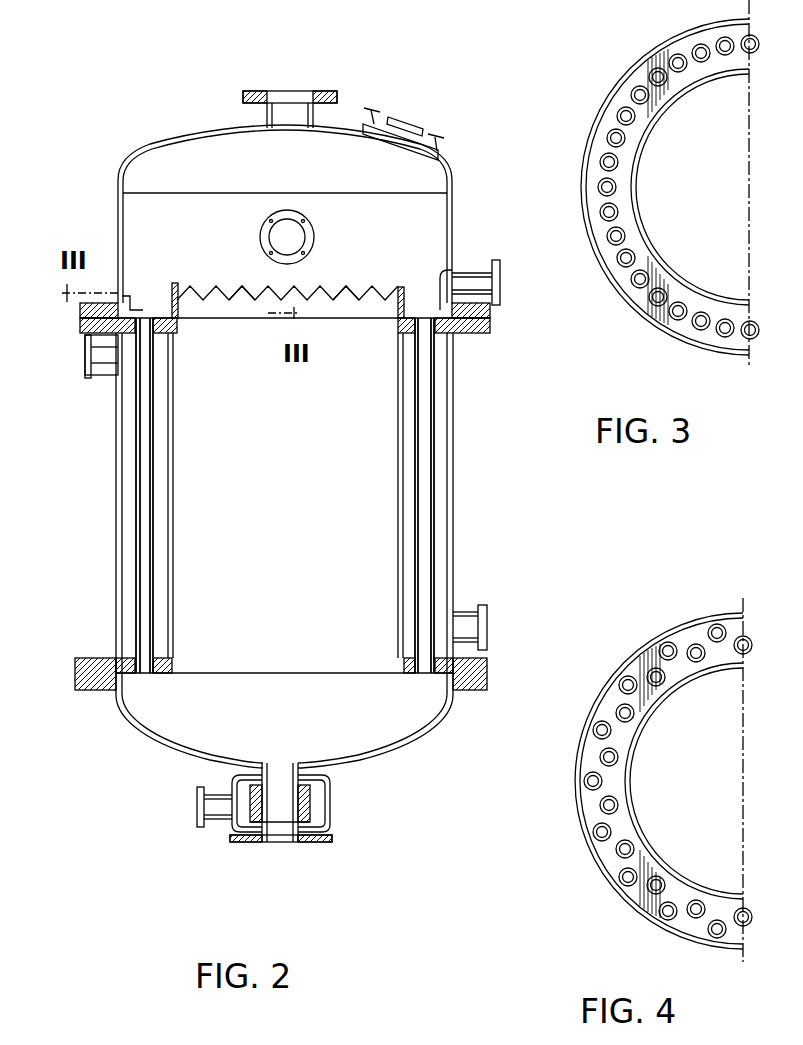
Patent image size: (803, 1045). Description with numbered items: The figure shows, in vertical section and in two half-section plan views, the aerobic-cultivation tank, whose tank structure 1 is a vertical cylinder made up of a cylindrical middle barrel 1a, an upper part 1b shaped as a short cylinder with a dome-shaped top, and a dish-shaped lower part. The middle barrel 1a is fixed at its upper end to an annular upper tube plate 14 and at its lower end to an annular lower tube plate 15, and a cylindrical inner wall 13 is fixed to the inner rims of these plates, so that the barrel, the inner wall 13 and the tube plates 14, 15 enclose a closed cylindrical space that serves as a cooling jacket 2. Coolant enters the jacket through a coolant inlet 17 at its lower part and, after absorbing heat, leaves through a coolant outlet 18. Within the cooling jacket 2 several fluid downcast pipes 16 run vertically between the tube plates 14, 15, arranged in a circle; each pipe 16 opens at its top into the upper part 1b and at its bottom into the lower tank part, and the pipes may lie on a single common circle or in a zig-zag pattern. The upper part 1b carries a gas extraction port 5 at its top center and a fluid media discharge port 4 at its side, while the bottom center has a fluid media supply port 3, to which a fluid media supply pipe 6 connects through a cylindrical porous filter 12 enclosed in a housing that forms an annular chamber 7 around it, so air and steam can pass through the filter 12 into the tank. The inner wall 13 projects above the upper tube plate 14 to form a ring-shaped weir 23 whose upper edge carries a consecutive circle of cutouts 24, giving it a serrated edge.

In FIG. 2, the tank structure 1 is at (298, 446).
In FIG. 2, the middle barrel 1a is at (452, 465).
In FIG. 2, the upper part 1b is at (455, 212).
In FIG. 3, the upper part 1b is at (668, 37).
In FIG. 4, the upper part 1b is at (655, 640).
In FIG. 2, the cooling jacket 2 is at (440, 413).
In FIG. 2, the fluid media supply port 3 is at (282, 776).
In FIG. 2, the fluid media discharge port 4 is at (477, 283).
In FIG. 2, the gas extraction port 5 is at (292, 98).
In FIG. 2, the fluid media supply pipe 6 is at (277, 838).
In FIG. 2, the annular chamber 7 is at (332, 802).
In FIG. 2, the porous filter 12 is at (318, 818).
In FIG. 2, the inner wall 13 is at (173, 470).
In FIG. 3, the inner wall 13 is at (638, 160).
In FIG. 4, the inner wall 13 is at (632, 792).
In FIG. 2, the upper tube plate 14 is at (402, 318).
In FIG. 3, the upper tube plate 14 is at (600, 118).
In FIG. 4, the upper tube plate 14 is at (592, 738).
In FIG. 2, the lower tube plate 15 is at (395, 668).
In FIG. 2, the fluid downcast pipes 16 is at (145, 515).
In FIG. 3, the fluid downcast pipes 16 is at (638, 92).
In FIG. 4, the fluid downcast pipes 16 is at (624, 710).
In FIG. 2, the coolant inlet 17 is at (470, 627).
In FIG. 2, the coolant outlet 18 is at (98, 362).
In FIG. 2, the weir 23 is at (361, 305).
In FIG. 2, the cutouts 24 is at (236, 290).